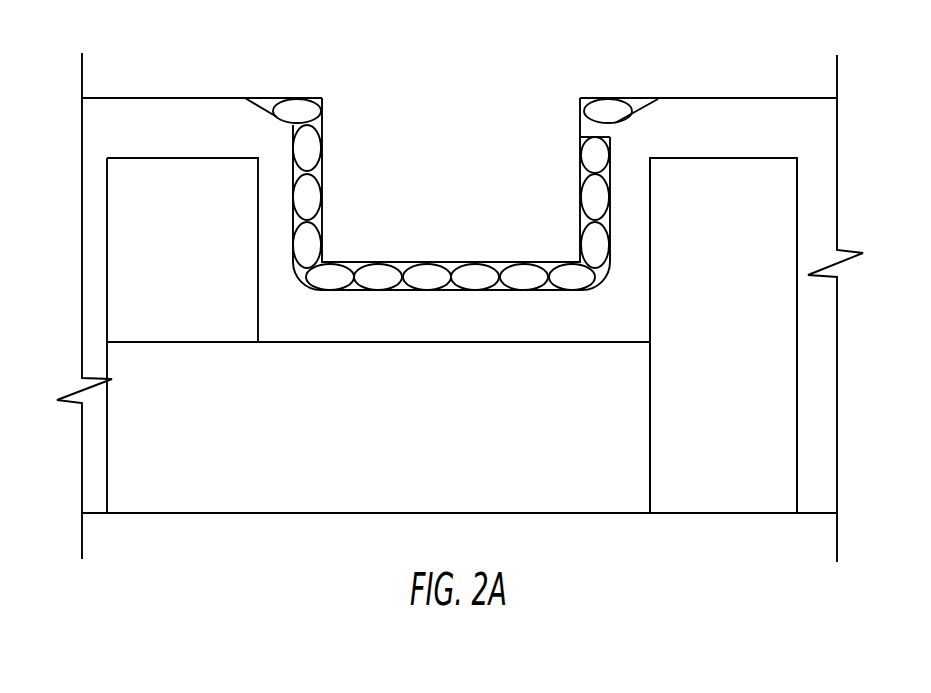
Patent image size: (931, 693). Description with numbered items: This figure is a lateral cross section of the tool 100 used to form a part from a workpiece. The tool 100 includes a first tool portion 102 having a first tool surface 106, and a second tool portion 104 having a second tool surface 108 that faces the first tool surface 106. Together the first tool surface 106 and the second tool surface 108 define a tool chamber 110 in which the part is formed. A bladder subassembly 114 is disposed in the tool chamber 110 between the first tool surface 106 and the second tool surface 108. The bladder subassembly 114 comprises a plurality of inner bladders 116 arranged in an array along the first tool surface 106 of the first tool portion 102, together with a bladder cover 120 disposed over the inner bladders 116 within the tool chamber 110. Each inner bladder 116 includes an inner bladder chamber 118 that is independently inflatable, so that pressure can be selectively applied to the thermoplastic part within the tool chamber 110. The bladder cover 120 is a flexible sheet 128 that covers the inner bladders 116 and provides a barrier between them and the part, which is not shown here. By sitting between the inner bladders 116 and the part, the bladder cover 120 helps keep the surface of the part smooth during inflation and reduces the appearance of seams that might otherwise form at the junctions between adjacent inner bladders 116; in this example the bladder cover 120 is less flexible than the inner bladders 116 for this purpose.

The tool 100 is at (131, 42).
The first tool portion 102 is at (470, 190).
The second tool portion 104 is at (671, 418).
The first tool surface 106 is at (613, 137).
The second tool surface 108 is at (650, 231).
The tool chamber 110 is at (469, 328).
The bladder subassembly 114 is at (293, 193).
The inner bladders 116 is at (315, 280).
The inner bladder chamber 118 is at (392, 280).
The bladder cover 120 is at (293, 220).
The flexible sheet 128 is at (612, 266).